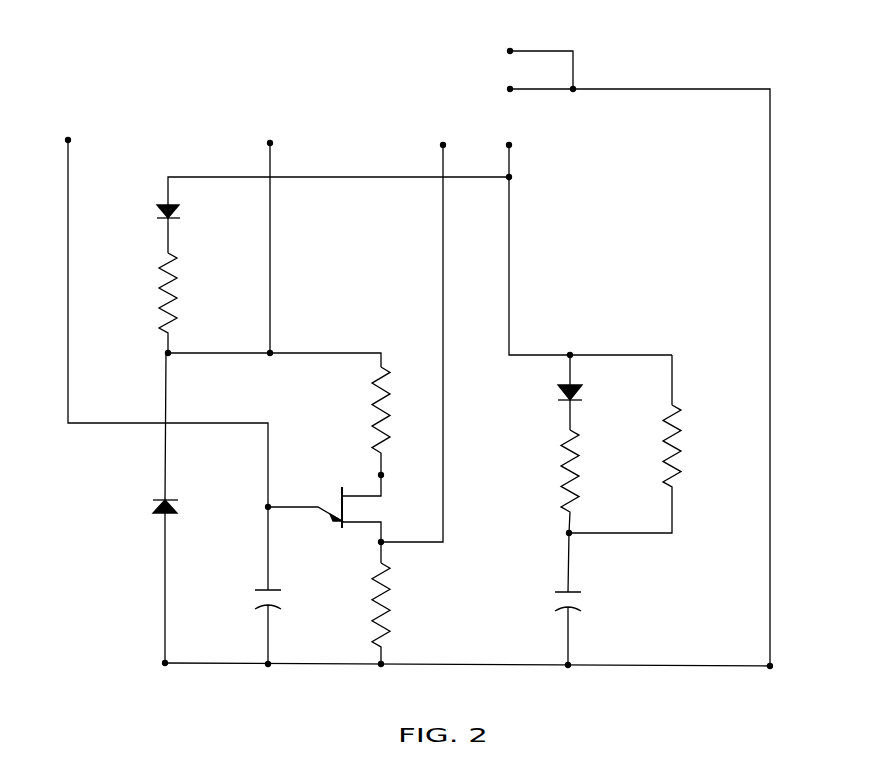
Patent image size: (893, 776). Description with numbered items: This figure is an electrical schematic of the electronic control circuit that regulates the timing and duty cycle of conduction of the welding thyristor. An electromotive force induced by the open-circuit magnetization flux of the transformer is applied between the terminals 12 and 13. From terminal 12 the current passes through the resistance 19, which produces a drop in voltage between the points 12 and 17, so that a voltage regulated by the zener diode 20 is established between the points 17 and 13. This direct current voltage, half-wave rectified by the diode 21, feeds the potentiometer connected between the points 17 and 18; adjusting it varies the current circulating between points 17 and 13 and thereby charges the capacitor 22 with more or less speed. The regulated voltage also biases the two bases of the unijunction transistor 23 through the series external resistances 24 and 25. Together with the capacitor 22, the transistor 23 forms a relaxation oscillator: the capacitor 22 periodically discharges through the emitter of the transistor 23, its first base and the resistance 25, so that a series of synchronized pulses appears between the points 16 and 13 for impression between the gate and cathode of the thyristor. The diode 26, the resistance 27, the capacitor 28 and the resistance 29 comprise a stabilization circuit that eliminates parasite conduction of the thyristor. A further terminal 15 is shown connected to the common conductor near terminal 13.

The terminal 12 is at (413, 237).
The terminal 13 is at (465, 389).
The terminal conductor 15 is at (528, 66).
The point 16 is at (418, 329).
The point 17 is at (258, 248).
The point 18 is at (170, 311).
The resistance 19 is at (153, 285).
The zener diode 20 is at (156, 493).
The diode 21 is at (155, 213).
The capacitor 22 is at (251, 585).
The unijunction transistor 23 is at (341, 512).
The external resistance 24 is at (367, 421).
The external resistance 25 is at (367, 603).
The diode 26 is at (555, 392).
The resistance 27 is at (557, 483).
The capacitor 28 is at (553, 599).
The resistance 29 is at (625, 444).